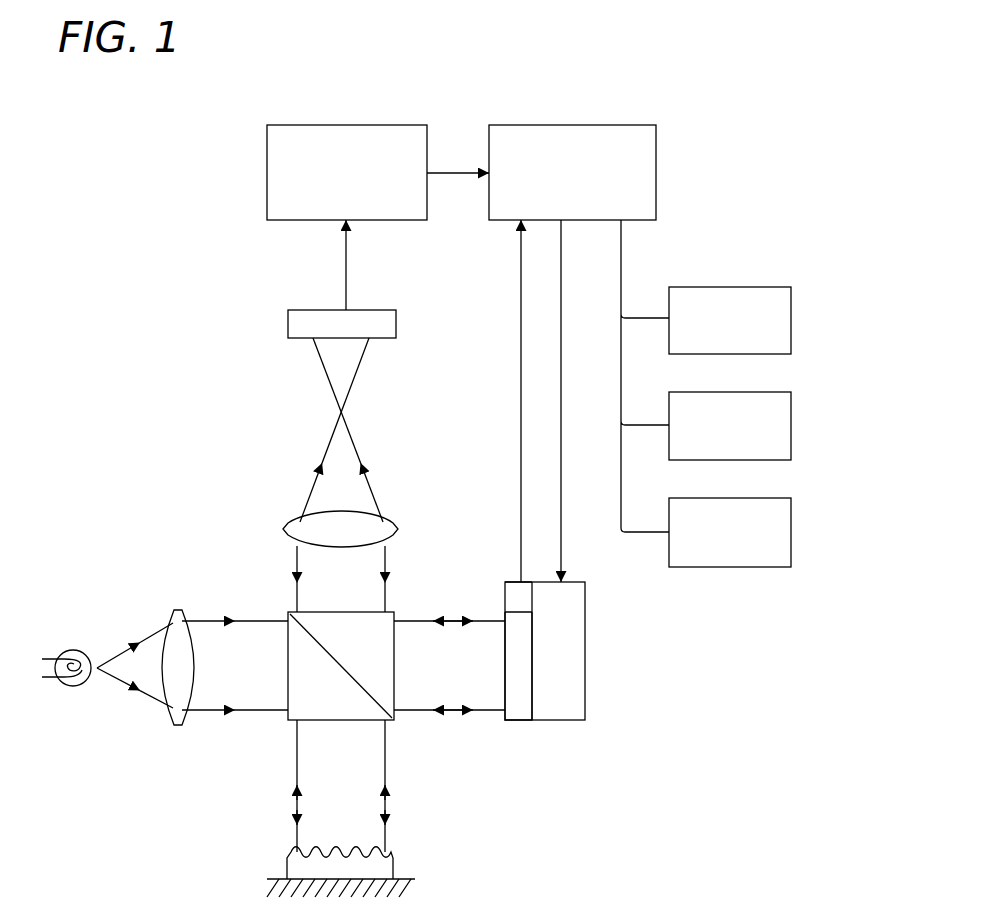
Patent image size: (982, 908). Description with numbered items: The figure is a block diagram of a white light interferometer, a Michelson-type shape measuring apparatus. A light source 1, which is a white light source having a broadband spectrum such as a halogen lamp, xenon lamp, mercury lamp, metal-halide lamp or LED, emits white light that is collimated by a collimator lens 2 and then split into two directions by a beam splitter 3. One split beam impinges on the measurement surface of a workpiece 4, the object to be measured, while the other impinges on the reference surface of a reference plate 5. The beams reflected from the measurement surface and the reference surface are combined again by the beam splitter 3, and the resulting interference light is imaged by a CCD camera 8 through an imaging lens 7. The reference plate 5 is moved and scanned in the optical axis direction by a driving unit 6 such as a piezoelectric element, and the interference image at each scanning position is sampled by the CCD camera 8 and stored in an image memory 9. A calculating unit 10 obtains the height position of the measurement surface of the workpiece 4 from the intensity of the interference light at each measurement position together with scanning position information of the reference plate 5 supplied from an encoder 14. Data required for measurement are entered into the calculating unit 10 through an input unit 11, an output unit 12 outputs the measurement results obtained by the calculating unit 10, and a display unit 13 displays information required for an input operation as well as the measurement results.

The light source 1 is at (73, 650).
The collimator lens 2 is at (176, 610).
The beam splitter 3 is at (288, 676).
The workpiece 4 is at (393, 869).
The reference plate 5 is at (518, 720).
The driving unit 6 is at (585, 660).
The imaging lens 7 is at (283, 530).
The CCD camera 8 is at (288, 325).
The image memory 9 is at (267, 178).
The calculating unit 10 is at (656, 178).
The input unit 11 is at (791, 322).
The output unit 12 is at (791, 435).
The display unit 13 is at (791, 535).
The encoder 14 is at (505, 595).